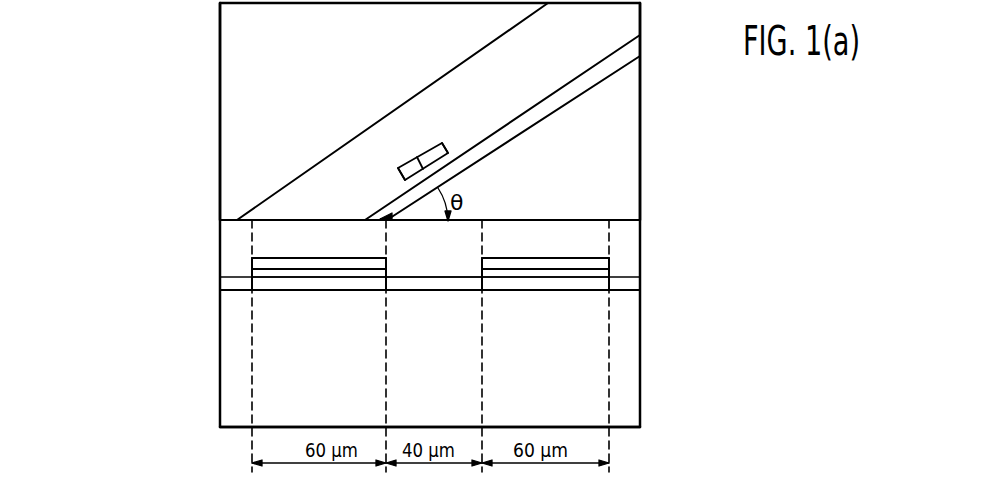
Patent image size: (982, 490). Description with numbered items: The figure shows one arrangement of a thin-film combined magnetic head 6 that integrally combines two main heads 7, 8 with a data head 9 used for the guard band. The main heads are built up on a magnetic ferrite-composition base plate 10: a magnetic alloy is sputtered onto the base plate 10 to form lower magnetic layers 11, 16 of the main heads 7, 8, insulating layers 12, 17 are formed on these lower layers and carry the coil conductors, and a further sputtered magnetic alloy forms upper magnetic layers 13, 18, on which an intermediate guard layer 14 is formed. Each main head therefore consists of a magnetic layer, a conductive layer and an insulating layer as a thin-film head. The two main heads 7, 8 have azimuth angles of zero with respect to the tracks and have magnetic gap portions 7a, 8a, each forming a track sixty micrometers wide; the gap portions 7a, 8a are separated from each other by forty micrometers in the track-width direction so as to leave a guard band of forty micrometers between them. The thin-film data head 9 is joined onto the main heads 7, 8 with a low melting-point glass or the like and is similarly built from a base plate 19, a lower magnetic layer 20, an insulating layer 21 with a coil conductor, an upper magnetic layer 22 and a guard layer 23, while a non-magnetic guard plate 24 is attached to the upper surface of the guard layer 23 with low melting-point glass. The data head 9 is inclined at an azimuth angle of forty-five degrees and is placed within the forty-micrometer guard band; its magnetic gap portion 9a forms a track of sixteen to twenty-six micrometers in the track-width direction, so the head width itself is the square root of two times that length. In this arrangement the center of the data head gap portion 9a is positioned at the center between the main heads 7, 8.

The combined magnetic head 6 is at (656, 191).
The main head 7 is at (280, 248).
The magnetic gap portion 7a is at (252, 268).
The main head 8 is at (585, 246).
The magnetic gap portion 8a is at (610, 274).
The data head 9 is at (412, 124).
The magnetic gap portion 9a is at (418, 165).
The base plate 10 is at (230, 382).
The lower magnetic layer 11 is at (308, 287).
The insulating layer 12 is at (352, 272).
The upper magnetic layer 13 is at (258, 261).
The intermediate guard layer 14 is at (437, 255).
The lower magnetic layer 16 is at (590, 292).
The insulating layer 17 is at (530, 272).
The upper magnetic layer 18 is at (610, 265).
The base plate 19 is at (627, 82).
The lower magnetic layer 20 is at (578, 84).
The insulating layer 21 is at (412, 182).
The upper magnetic layer 22 is at (442, 143).
The guard layer 23 is at (625, 23).
The non-magnetic guard plate 24 is at (232, 45).